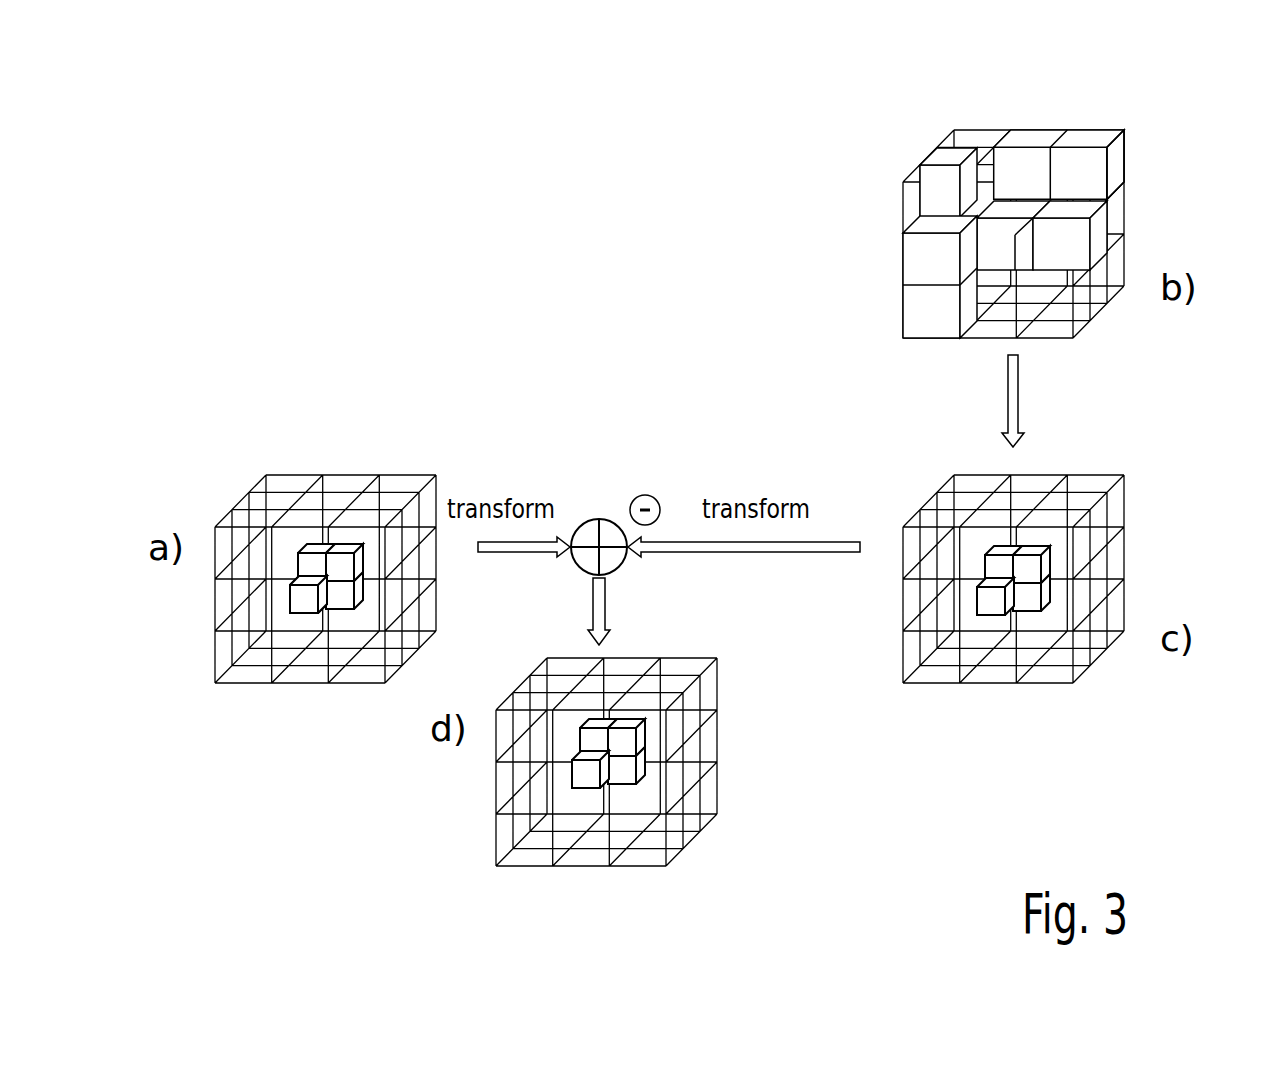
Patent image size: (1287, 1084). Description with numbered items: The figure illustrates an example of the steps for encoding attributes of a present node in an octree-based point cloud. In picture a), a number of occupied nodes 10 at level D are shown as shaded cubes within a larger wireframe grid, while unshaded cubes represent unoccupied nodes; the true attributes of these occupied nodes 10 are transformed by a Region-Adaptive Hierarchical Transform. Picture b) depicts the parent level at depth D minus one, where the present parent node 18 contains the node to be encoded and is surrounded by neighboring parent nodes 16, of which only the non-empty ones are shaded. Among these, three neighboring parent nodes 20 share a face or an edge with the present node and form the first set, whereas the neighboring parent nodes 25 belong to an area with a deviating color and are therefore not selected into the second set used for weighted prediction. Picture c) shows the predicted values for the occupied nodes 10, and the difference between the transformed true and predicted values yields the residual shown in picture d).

The occupied nodes 10 is at (320, 545).
The neighboring parent nodes 16 is at (1047, 140).
The present parent node 18 is at (1012, 212).
The neighboring parent nodes of the first set 20 is at (1022, 140).
The neighboring parent nodes with deviating color 25 is at (1117, 158).